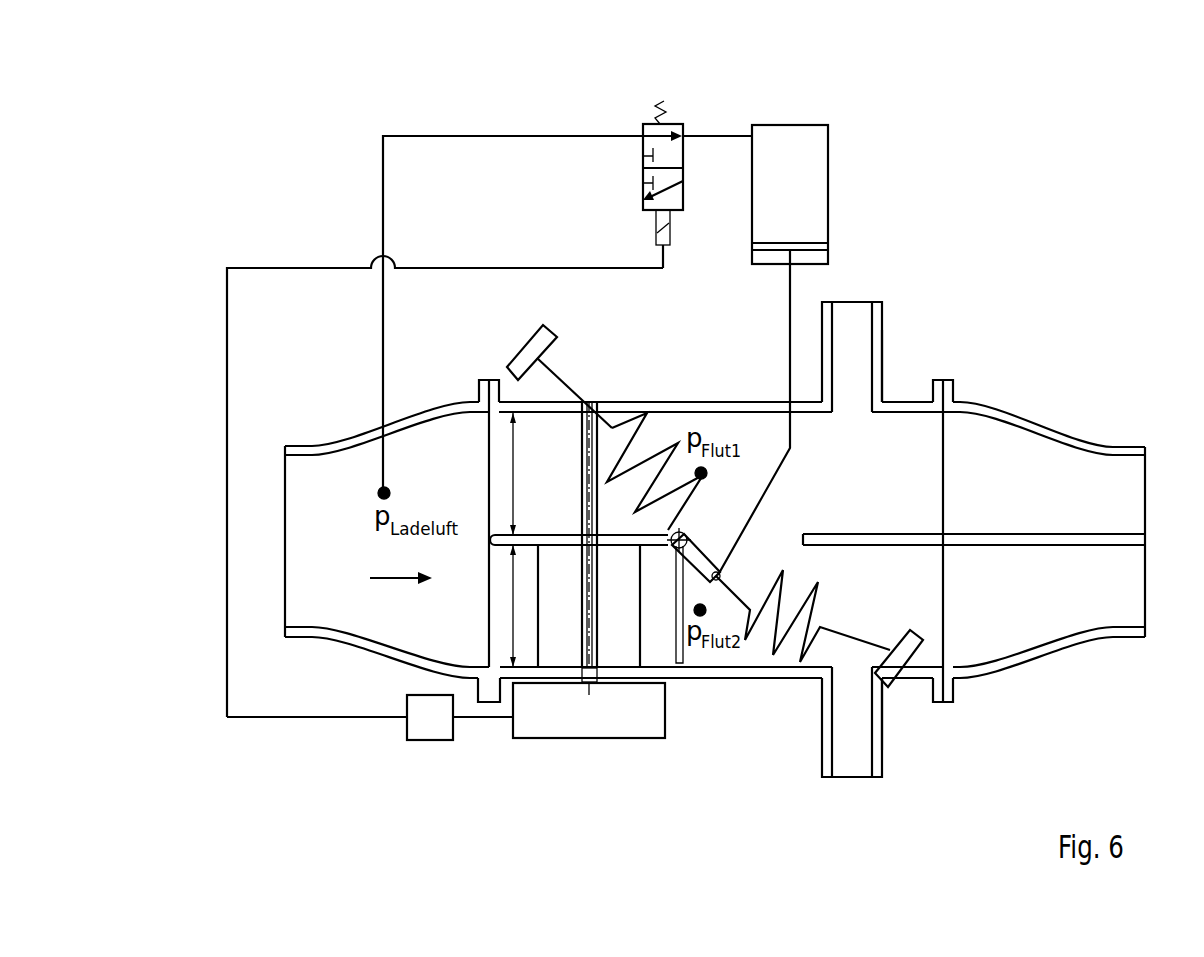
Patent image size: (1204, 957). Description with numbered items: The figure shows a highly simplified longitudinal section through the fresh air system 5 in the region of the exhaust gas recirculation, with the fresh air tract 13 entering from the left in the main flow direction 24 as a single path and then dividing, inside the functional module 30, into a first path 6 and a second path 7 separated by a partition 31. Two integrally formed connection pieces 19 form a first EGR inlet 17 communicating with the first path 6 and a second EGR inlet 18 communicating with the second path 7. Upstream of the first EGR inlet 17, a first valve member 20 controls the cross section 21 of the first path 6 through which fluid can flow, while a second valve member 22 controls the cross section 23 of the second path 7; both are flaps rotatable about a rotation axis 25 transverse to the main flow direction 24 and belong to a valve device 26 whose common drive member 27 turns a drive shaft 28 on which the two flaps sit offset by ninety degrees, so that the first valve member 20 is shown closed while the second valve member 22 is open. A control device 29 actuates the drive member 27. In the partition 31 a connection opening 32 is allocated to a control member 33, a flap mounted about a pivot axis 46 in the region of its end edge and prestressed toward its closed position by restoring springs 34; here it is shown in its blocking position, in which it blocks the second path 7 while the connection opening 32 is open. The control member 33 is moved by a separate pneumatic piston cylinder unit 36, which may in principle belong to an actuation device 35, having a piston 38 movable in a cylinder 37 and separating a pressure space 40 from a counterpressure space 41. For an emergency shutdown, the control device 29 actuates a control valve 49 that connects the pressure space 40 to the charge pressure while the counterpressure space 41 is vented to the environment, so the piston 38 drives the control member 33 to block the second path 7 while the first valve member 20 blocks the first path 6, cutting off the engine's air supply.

The fresh air system 5 is at (276, 230).
The first path 6 is at (725, 418).
The second path 7 is at (765, 652).
The fresh air tract 13 is at (329, 432).
The first EGR inlet 17 is at (850, 312).
The second EGR inlet 18 is at (850, 766).
The connection piece 19 is at (884, 352).
The first valve member 20 is at (583, 503).
The cross section of the first path 21 is at (513, 462).
The second valve member 22 is at (573, 611).
The cross section of the second path 23 is at (513, 585).
The main flow direction 24 is at (400, 582).
The rotation axis 25 is at (589, 400).
The valve device 26 is at (588, 748).
The drive member 27 is at (556, 738).
The drive shaft 28 is at (598, 682).
The control device 29 is at (443, 729).
The functional module 30 is at (741, 688).
The partition 31 is at (890, 534).
The connection opening 32 is at (803, 534).
The control member 33 is at (684, 663).
The restoring spring 34 is at (631, 414).
The actuation device 35 is at (862, 132).
The piston cylinder unit 36 is at (836, 185).
The cylinder 37 is at (829, 221).
The piston 38 is at (754, 249).
The pressure space 40 is at (787, 140).
The counterpressure space 41 is at (779, 265).
The pivot axis 46 is at (700, 530).
The control valve 49 is at (643, 193).